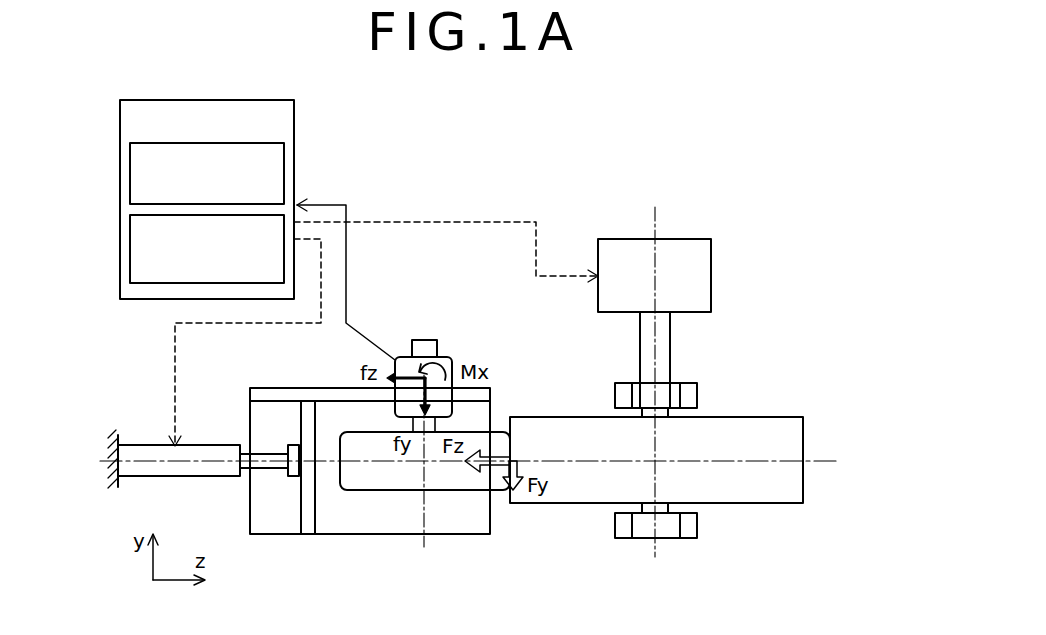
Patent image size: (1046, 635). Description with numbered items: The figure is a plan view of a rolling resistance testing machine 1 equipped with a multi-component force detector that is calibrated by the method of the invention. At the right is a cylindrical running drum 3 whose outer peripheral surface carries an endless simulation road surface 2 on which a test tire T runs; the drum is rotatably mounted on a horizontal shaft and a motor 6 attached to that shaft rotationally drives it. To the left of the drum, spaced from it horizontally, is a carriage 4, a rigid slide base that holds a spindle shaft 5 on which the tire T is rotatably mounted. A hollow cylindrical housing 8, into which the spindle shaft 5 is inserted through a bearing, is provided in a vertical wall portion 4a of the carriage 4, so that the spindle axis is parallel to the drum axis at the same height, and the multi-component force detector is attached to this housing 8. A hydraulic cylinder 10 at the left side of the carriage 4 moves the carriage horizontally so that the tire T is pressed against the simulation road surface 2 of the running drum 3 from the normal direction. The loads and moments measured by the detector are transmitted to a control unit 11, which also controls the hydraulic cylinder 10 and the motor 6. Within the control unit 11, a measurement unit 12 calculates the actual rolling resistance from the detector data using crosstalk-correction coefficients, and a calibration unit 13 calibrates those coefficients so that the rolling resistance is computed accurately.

The rolling resistance testing machine 1 is at (620, 146).
The simulation road surface 2 is at (783, 417).
The running drum 3 is at (742, 417).
The carriage 4 is at (399, 500).
The vertical wall portion 4a is at (472, 402).
The spindle shaft 5 is at (427, 340).
The motor 6 is at (690, 239).
The housing 8 is at (403, 355).
The hydraulic cylinder 10 is at (142, 445).
The control unit 11 is at (243, 99).
The measurement unit 12 is at (155, 284).
The calibration unit 13 is at (284, 165).
The tire T is at (353, 484).